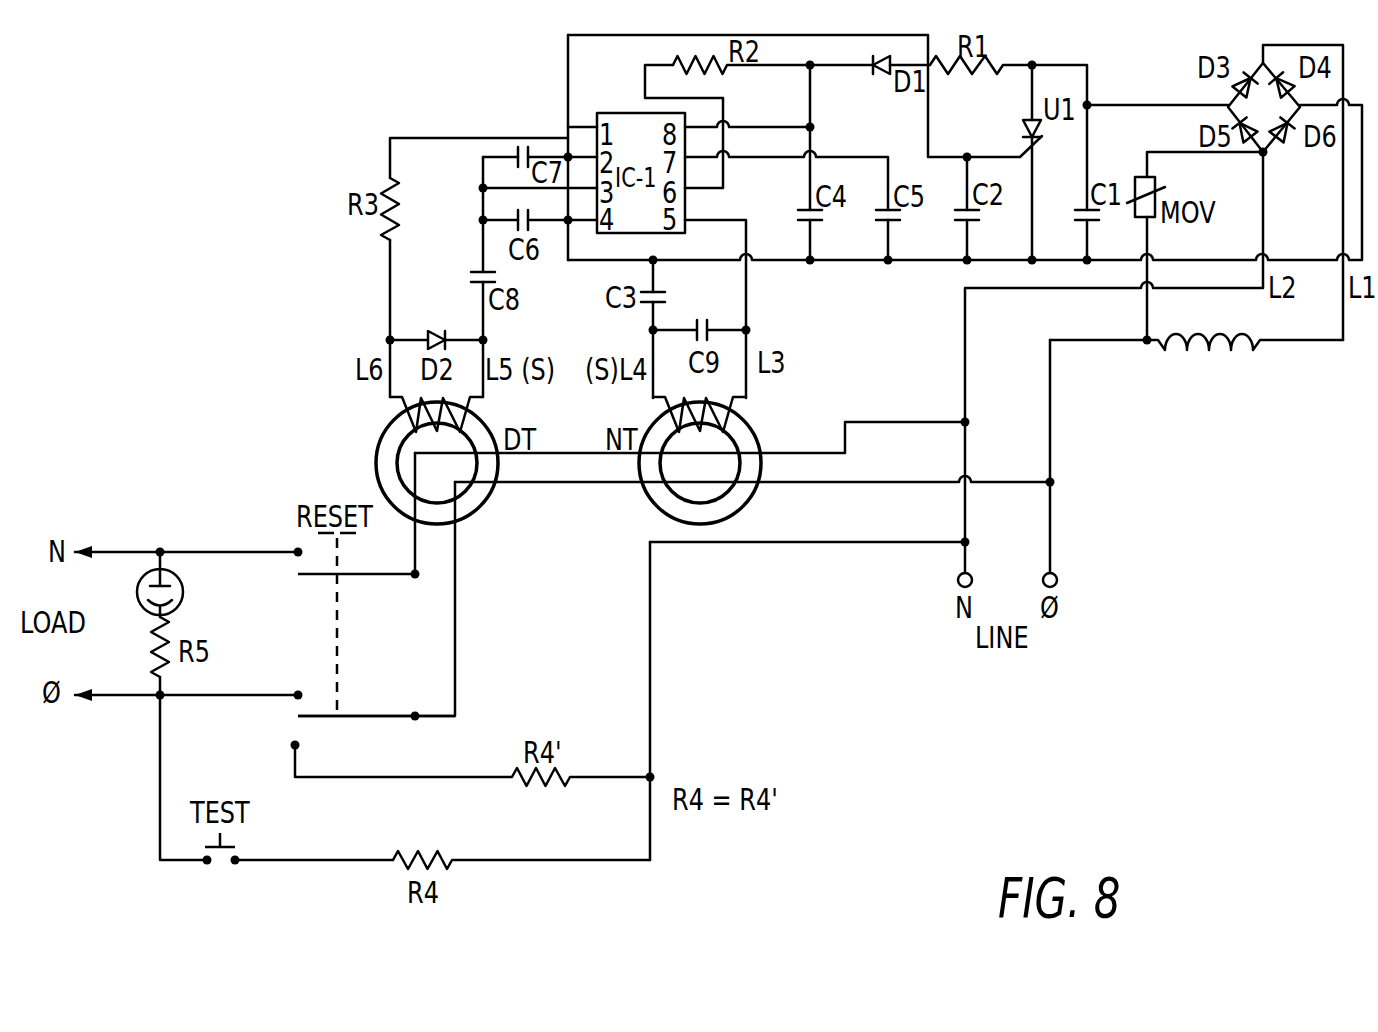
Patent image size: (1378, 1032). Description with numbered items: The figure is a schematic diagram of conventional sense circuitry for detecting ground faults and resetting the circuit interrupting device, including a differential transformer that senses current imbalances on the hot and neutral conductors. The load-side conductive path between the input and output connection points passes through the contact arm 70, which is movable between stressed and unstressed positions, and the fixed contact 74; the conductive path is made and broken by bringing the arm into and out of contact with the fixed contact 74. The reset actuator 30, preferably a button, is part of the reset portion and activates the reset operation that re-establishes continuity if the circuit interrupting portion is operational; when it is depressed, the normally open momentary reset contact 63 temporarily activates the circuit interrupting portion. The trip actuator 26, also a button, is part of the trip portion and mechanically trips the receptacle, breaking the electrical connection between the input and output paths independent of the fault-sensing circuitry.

The reset actuator 30 is at (292, 519).
The fixed contact 74 is at (296, 682).
The reset contact 63 is at (283, 738).
The contact arm 70 is at (362, 722).
The trip actuator 26 is at (245, 840).